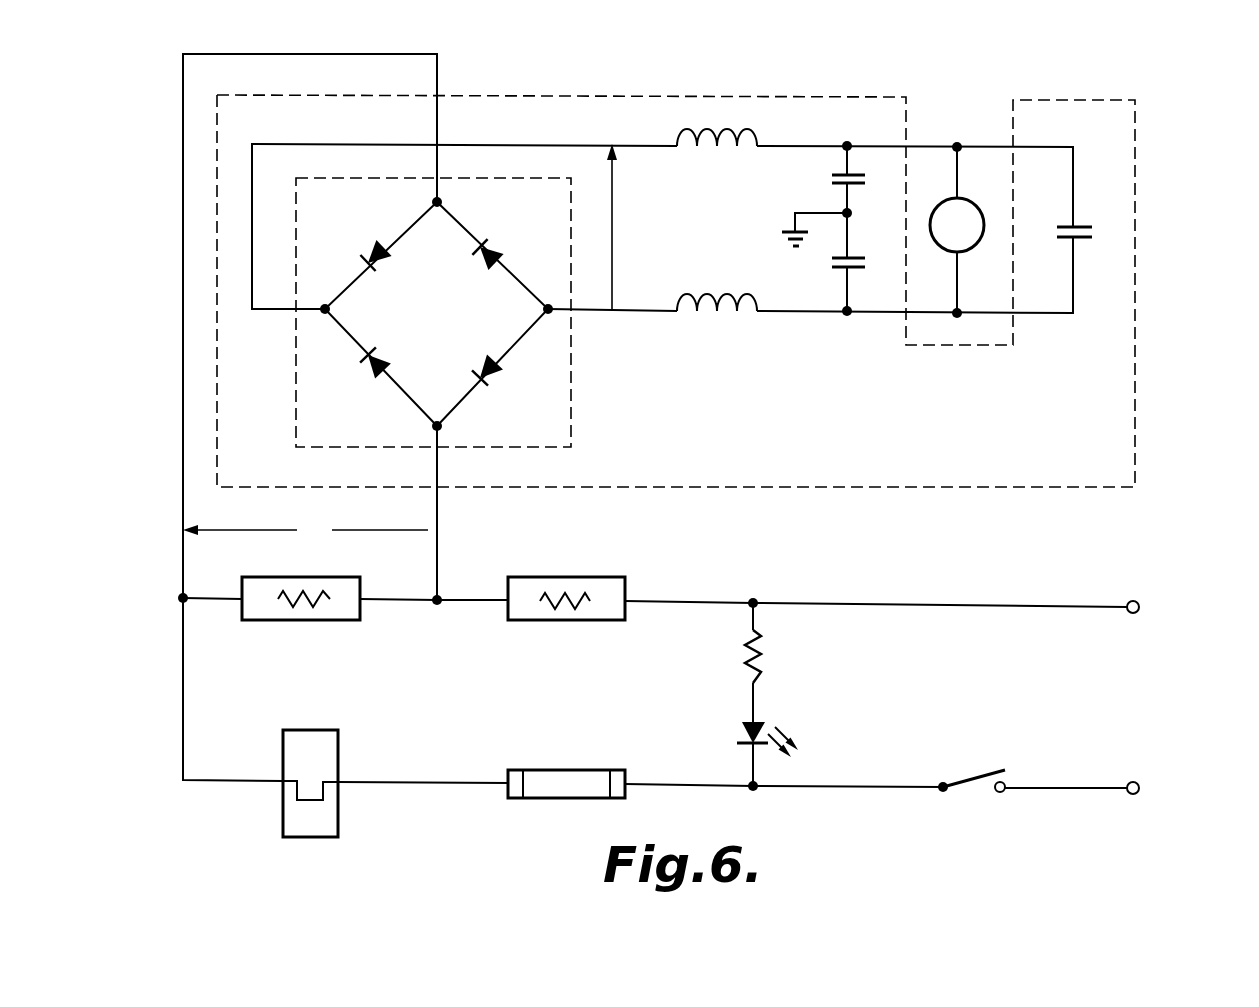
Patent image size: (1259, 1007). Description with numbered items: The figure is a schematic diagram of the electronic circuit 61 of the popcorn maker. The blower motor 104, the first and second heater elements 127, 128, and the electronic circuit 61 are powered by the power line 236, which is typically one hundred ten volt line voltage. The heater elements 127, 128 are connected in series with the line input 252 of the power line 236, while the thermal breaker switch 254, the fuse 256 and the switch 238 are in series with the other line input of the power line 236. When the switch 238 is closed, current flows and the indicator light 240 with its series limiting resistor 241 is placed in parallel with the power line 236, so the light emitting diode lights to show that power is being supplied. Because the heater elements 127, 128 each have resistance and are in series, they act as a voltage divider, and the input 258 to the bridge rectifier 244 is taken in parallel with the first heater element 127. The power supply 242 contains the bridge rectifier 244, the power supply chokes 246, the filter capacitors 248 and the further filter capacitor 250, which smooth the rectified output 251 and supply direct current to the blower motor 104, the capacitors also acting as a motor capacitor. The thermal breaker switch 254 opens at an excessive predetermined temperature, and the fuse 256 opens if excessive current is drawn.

The electronic circuit 61 is at (1176, 83).
The power supply PS 242 is at (498, 93).
The bridge rectifier BR1 244 is at (488, 177).
The power supply chokes L1 246 is at (757, 132).
The filter capacitors C1 248 is at (862, 190).
The rectified output VR1 251 is at (635, 228).
The blower motor M1 104 is at (958, 199).
The filter capacitor C2 250 is at (1080, 225).
The input V1 258 is at (303, 523).
The heater element H1 127 is at (318, 577).
The heater element H2 128 is at (563, 577).
The thermal breaker switch ST1 254 is at (338, 750).
The fuse F1 256 is at (540, 770).
The limiting resistor R1 241 is at (760, 660).
The indicator light LED1 240 is at (757, 720).
The switch S1 238 is at (1000, 768).
The line input 252 is at (1128, 600).
The power line 236 is at (1117, 667).